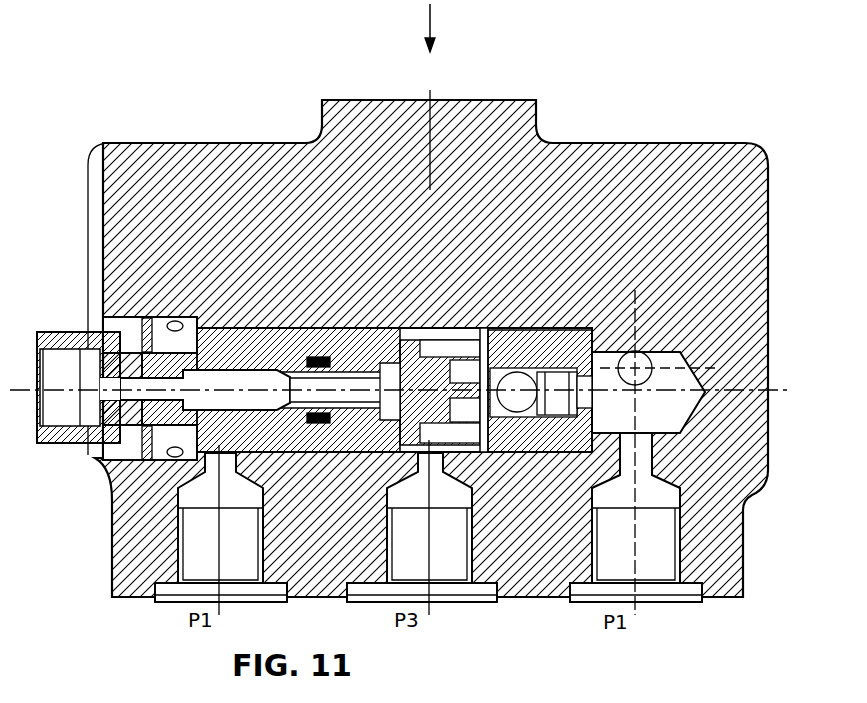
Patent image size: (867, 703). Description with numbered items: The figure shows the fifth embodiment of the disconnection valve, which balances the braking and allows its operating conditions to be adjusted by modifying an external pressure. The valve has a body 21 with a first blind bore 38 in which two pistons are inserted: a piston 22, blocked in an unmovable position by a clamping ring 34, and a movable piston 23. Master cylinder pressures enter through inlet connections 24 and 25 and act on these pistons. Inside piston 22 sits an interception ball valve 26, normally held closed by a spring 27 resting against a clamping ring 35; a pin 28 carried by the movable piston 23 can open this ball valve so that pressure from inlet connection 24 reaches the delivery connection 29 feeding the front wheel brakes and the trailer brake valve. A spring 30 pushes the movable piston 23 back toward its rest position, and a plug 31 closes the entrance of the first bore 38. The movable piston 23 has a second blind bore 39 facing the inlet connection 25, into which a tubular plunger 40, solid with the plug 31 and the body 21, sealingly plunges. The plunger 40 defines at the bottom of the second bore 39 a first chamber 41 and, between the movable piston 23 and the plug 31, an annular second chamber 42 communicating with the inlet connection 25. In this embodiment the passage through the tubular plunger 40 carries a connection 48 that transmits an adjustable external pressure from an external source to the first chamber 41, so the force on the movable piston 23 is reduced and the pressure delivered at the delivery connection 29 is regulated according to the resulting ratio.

The body 21 is at (170, 163).
The piston 22 is at (575, 340).
The movable piston 23 is at (383, 328).
The inlet connection 24 is at (627, 549).
The inlet connection 25 is at (212, 572).
The interception ball valve 26 is at (503, 452).
The spring 27 is at (538, 450).
The pin 28 is at (462, 330).
The delivery connection 29 is at (418, 574).
The spring 30 is at (417, 450).
The plug 31 is at (160, 320).
The clamping ring 34 is at (472, 551).
The clamping ring 35 is at (590, 408).
The first blind bore 38 is at (290, 333).
The second blind bore 39 is at (331, 453).
The tubular plunger 40 is at (228, 447).
The first chamber 41 is at (438, 450).
The second chamber 42 is at (214, 447).
The connection 48 is at (62, 332).